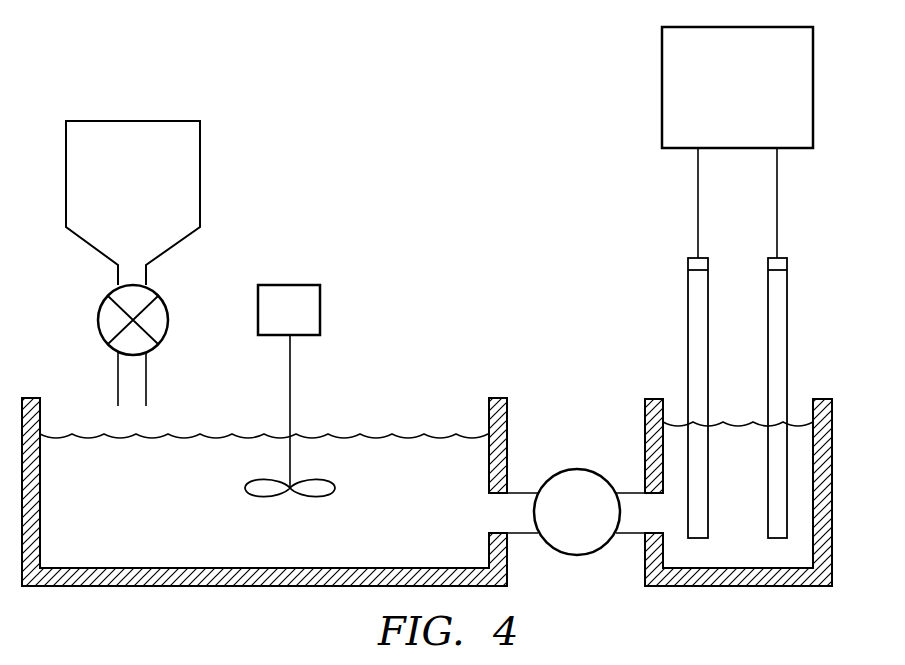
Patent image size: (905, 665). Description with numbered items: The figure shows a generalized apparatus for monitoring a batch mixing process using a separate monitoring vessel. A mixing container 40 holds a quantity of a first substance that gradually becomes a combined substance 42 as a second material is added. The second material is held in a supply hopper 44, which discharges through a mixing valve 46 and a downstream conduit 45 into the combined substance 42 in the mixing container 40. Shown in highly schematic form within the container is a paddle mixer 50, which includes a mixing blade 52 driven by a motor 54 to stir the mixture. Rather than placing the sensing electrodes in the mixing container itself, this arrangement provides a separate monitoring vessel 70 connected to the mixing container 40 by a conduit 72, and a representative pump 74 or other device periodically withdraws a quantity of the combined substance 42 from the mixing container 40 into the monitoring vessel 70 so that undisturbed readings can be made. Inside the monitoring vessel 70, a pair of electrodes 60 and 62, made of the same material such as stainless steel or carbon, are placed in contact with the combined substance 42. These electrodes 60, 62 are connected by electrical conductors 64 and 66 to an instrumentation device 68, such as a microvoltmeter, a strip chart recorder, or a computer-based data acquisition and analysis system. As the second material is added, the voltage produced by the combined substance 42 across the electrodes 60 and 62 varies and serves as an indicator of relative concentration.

The mixing container 40 is at (507, 420).
The combined substance 42 is at (403, 460).
The supply hopper 44 is at (200, 145).
The feed pipe 45 is at (146, 388).
The mixing valve 46 is at (98, 316).
The paddle mixer 50 is at (308, 238).
The mixing blade 52 is at (245, 487).
The motor 54 is at (320, 310).
The electrode 60 is at (697, 322).
The electrode 62 is at (780, 333).
The electrical conductor 64 is at (698, 203).
The electrical conductor 66 is at (777, 200).
The instrumentation device 68 is at (728, 27).
The monitoring vessel 70 is at (832, 468).
The conduit 72 is at (624, 533).
The pump 74 is at (577, 470).